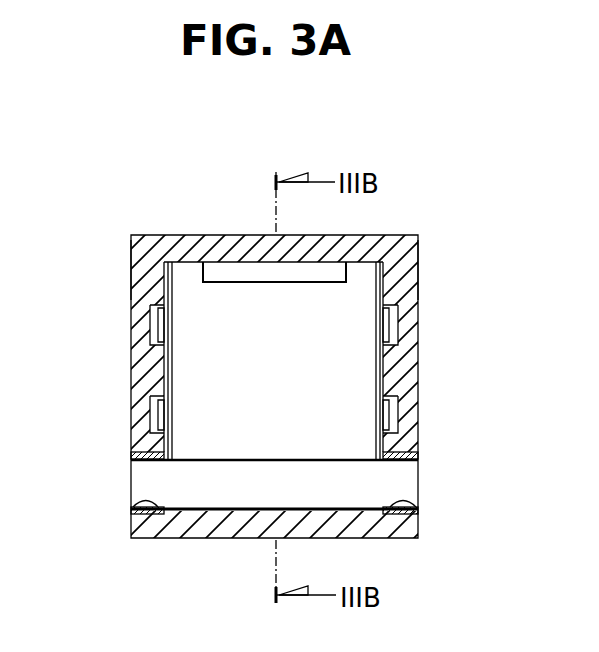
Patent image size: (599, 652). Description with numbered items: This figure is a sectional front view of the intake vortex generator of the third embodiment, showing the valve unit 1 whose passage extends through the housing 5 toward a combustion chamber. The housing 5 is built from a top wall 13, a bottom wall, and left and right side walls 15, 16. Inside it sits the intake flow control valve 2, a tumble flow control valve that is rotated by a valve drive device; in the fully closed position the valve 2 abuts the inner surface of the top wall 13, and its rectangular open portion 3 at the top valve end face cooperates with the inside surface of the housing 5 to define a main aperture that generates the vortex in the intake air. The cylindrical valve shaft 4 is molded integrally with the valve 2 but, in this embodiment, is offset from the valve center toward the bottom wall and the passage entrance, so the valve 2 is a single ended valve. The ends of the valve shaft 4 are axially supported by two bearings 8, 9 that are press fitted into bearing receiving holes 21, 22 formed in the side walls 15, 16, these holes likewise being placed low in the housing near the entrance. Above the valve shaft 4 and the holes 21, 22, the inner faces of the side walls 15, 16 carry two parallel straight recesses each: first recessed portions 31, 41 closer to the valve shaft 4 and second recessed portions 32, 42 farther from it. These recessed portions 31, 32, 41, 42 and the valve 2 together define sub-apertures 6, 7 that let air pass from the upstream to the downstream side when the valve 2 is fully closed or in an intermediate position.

The valve unit 1 is at (128, 173).
The intake flow control valve 2 is at (373, 234).
The open portion 3 is at (228, 234).
The valve shaft 4 is at (228, 496).
The housing 5 is at (187, 235).
The sub-aperture 6 is at (130, 398).
The sub-aperture 7 is at (420, 390).
The bearing 8 is at (130, 453).
The bearing 9 is at (418, 456).
The top wall 13 is at (262, 234).
The side wall 15 is at (138, 272).
The side wall 16 is at (400, 294).
The bearing receiving hole 21 is at (130, 502).
The bearing receiving hole 22 is at (418, 502).
The first recessed portion 31 is at (156, 400).
The second recessed portion 32 is at (160, 308).
The first recessed portion 41 is at (400, 410).
The second recessed portion 42 is at (396, 324).